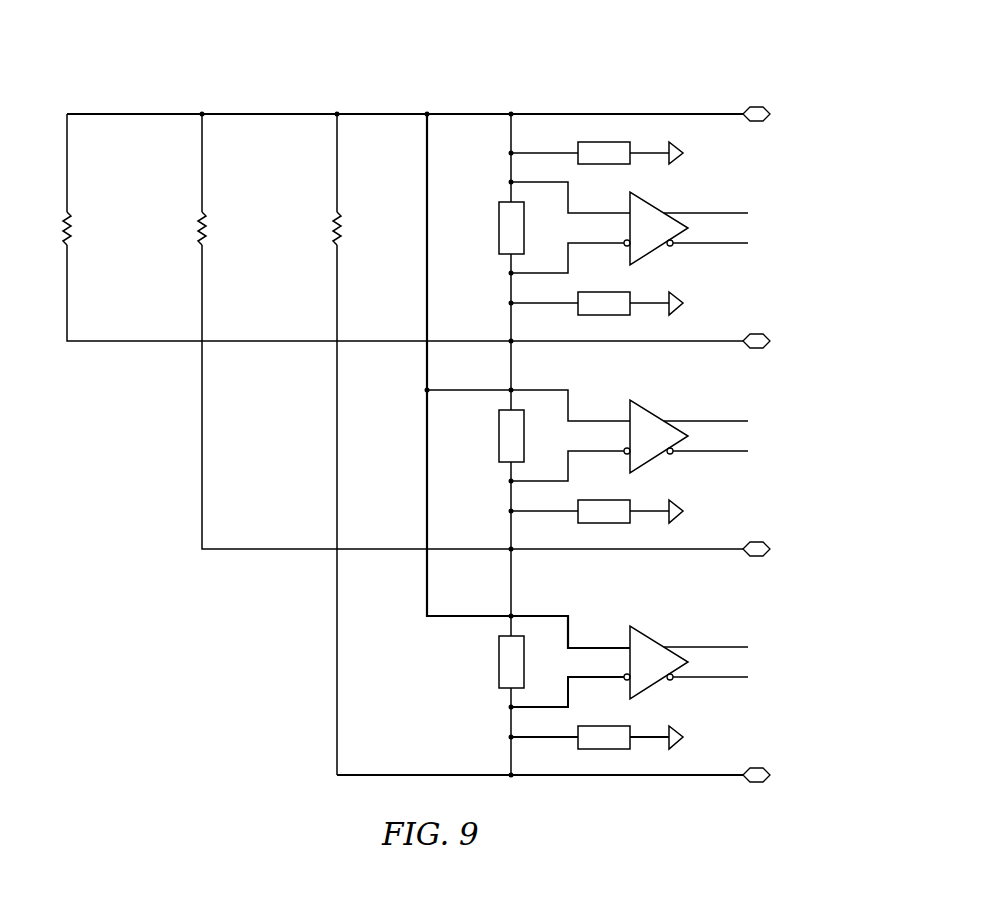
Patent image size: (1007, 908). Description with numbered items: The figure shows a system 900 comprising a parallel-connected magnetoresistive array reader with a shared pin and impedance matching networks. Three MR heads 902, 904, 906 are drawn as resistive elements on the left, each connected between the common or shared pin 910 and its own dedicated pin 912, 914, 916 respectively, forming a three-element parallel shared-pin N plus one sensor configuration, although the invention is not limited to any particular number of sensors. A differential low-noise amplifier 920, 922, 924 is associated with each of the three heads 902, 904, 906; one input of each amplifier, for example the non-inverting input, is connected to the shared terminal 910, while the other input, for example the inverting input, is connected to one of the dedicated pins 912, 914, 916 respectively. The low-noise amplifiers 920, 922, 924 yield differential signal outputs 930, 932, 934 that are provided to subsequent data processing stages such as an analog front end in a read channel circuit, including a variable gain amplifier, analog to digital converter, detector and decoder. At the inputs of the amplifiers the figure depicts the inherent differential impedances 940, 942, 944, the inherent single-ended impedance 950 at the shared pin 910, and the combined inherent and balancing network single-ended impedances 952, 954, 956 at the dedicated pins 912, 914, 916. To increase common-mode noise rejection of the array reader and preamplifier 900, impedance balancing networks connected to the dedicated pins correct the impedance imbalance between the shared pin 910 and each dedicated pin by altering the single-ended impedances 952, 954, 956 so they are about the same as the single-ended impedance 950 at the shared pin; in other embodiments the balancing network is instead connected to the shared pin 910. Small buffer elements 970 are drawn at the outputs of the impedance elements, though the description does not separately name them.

The system 900 is at (703, 62).
The MR head RMRa 902 is at (67, 212).
The MR head RMRb 904 is at (202, 212).
The MR head RMRc 906 is at (337, 212).
The shared pin HRP 910 is at (757, 122).
The dedicated pin HRNA 912 is at (757, 349).
The dedicated pin HRNB 914 is at (757, 557).
The dedicated pin HRNC 916 is at (757, 783).
The differential low-noise amplifier 920 is at (650, 250).
The differential low-noise amplifier 922 is at (650, 458).
The differential low-noise amplifier 924 is at (650, 684).
The differential signal output Vo_a 930 is at (770, 240).
The differential signal output Vo_b 932 is at (770, 448).
The differential signal output Vo_c 934 is at (770, 674).
The inherent differential impedance ZD 940 is at (498, 245).
The inherent differential impedance ZD 942 is at (498, 453).
The inherent differential impedance ZD 944 is at (498, 679).
The inherent single-ended impedance ZSEsh 950 is at (612, 141).
The single-ended impedance ZSEd 952 is at (612, 316).
The single-ended impedance ZSEd 954 is at (612, 524).
The single-ended impedance ZSEd 956 is at (612, 750).
The buffer 970 is at (684, 156).